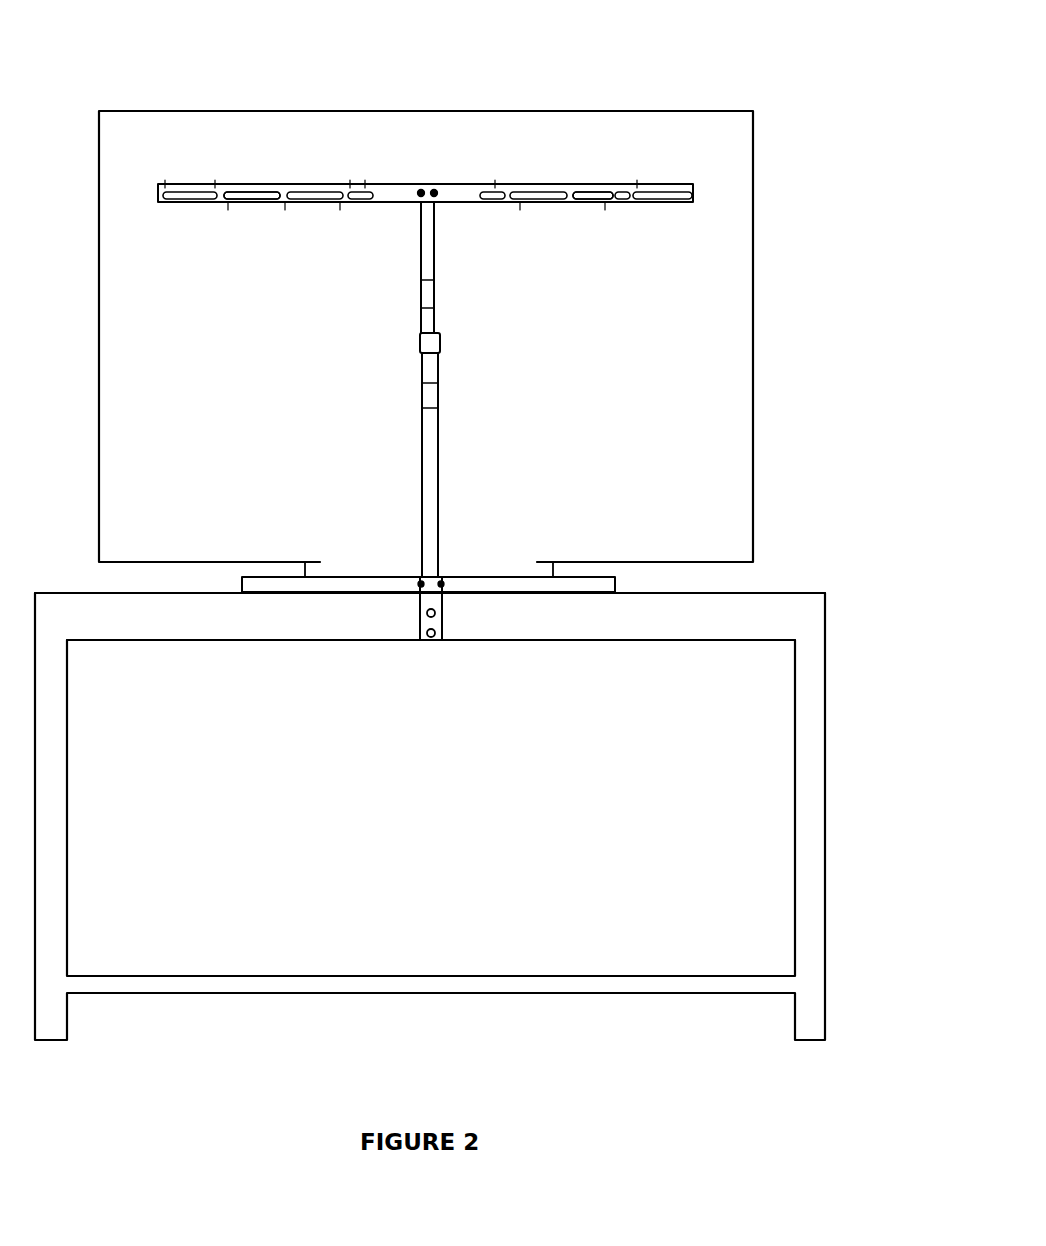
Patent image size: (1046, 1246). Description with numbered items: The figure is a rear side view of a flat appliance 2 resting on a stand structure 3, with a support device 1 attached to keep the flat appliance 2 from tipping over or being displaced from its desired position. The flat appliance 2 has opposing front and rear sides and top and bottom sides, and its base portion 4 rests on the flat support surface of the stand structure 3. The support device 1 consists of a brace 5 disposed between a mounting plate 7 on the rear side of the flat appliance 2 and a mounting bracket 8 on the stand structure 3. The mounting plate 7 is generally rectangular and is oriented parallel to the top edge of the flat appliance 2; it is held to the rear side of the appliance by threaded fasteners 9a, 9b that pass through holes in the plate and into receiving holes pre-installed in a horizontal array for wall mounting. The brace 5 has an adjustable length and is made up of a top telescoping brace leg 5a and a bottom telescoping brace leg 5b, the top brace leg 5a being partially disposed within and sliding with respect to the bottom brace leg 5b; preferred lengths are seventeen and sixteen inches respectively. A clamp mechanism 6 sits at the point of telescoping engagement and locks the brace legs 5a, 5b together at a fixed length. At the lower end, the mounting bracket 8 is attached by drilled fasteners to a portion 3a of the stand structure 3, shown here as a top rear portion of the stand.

The support device 1 is at (745, 92).
The flat appliance 2 is at (757, 282).
The stand structure 3 is at (826, 642).
The portion of the stand structure 3a is at (480, 630).
The base portion 4 is at (617, 585).
The brace 5 is at (500, 375).
The top telescoping brace leg 5a is at (432, 248).
The bottom telescoping brace leg 5b is at (437, 510).
The clamp mechanism 6 is at (415, 345).
The mounting plate 7 is at (680, 203).
The mounting bracket 8 is at (424, 642).
The threaded fastener 9a is at (243, 188).
The threaded fastener 9b is at (607, 188).